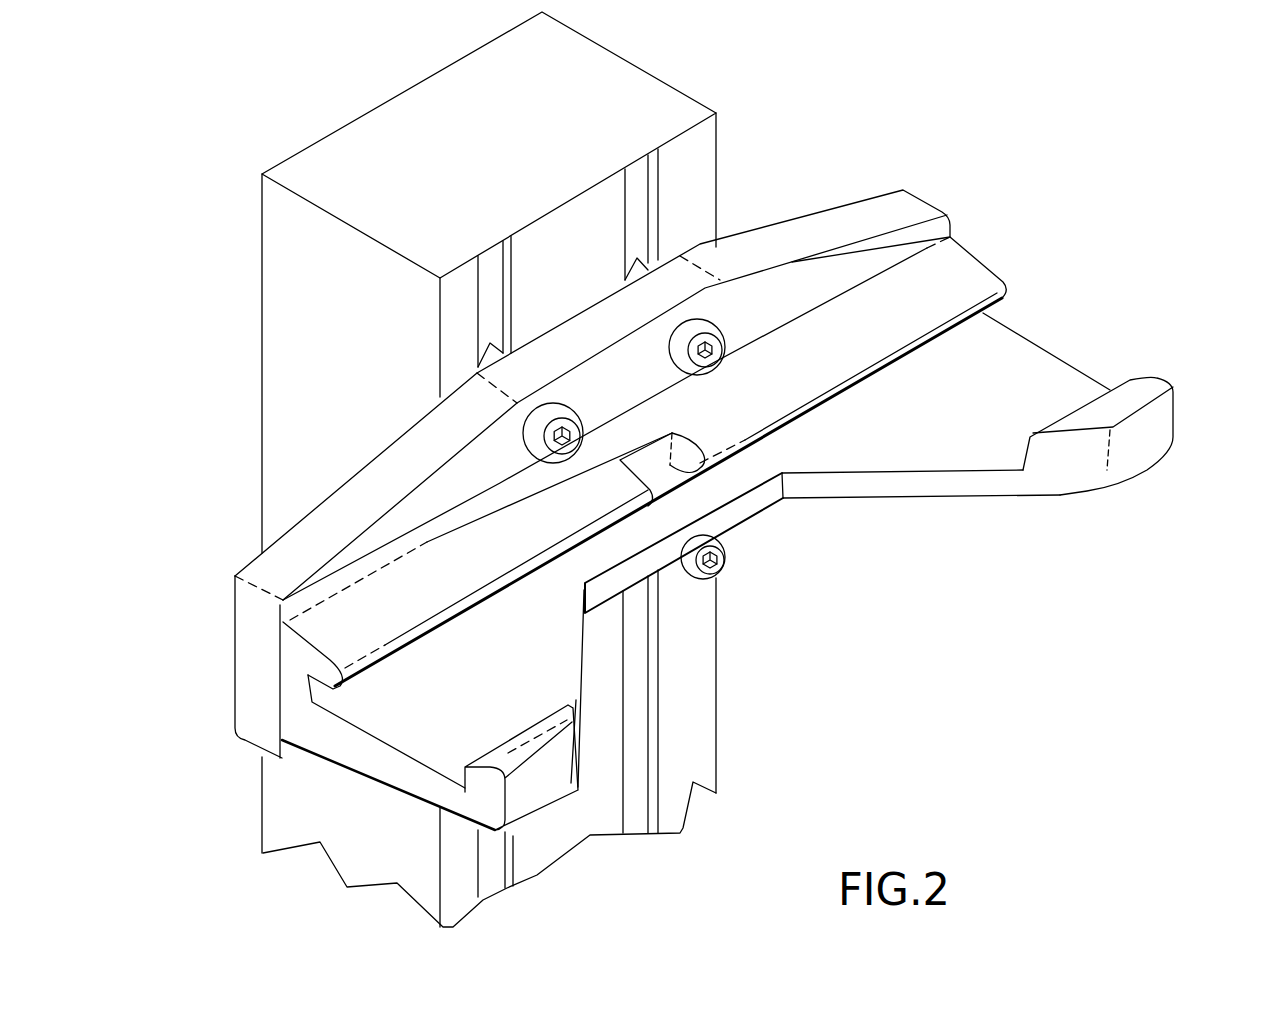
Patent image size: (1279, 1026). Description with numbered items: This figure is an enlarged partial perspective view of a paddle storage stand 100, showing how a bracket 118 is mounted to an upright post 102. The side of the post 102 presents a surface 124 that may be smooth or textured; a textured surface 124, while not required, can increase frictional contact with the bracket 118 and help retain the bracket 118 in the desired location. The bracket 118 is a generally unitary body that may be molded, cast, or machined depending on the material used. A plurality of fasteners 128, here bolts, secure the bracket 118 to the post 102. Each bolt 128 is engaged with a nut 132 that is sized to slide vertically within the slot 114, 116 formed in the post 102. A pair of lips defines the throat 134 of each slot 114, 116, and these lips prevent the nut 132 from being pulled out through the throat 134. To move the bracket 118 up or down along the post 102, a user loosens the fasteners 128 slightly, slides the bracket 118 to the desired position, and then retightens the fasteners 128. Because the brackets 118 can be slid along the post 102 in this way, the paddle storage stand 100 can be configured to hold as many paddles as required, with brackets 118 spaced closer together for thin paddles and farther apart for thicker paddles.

The paddle storage stand 100 is at (218, 306).
The post 102 is at (652, 101).
The slot 114 is at (480, 305).
The slot 116 is at (646, 209).
The bracket 118 is at (1140, 272).
The surface 124 is at (700, 225).
The fasteners 128 is at (712, 352).
The nut 132 is at (663, 183).
The throat 134 is at (502, 306).